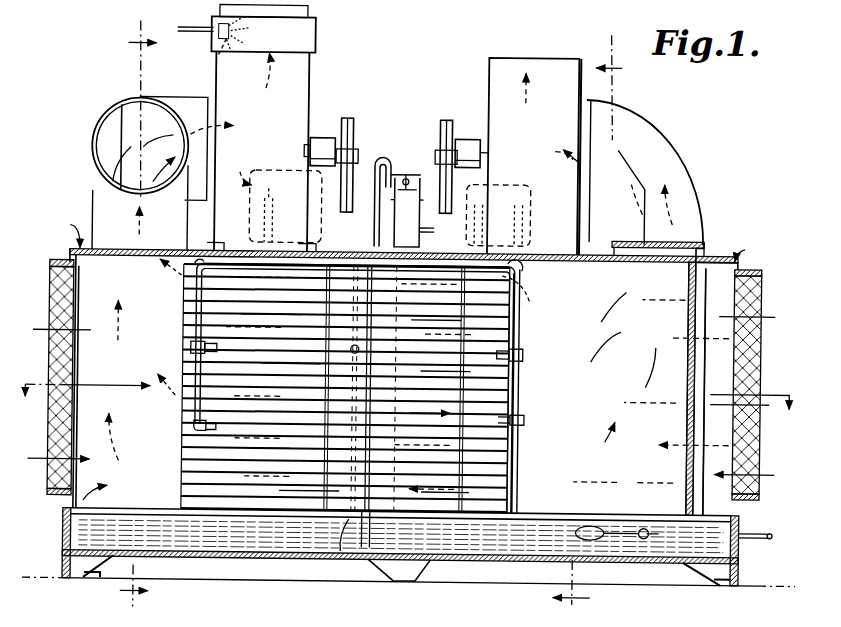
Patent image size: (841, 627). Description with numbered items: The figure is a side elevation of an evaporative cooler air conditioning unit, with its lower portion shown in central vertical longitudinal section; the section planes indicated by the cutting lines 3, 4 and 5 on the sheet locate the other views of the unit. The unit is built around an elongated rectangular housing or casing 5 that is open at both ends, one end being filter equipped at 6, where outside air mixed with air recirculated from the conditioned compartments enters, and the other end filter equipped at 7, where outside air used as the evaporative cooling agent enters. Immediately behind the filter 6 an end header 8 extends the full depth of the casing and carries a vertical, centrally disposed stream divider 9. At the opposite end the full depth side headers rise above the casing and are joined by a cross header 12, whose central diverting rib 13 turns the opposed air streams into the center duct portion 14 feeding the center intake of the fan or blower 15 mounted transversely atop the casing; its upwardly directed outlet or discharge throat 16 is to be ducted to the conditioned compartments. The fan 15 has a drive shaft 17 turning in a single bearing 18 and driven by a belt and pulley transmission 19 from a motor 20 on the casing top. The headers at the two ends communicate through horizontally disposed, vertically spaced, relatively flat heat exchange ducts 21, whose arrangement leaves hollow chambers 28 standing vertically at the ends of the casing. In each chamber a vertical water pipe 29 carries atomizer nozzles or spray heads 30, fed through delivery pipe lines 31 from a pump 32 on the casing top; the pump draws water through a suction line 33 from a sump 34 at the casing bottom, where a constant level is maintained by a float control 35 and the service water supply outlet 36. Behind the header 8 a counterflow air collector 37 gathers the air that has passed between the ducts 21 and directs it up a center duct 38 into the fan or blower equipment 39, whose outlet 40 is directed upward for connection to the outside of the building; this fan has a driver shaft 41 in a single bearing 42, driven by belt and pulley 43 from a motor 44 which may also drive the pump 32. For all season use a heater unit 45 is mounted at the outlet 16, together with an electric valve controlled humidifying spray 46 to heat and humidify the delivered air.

The section line 3- 3 is at (403, 410).
The section line 4- 4 is at (138, 313).
The housing or casing 5 is at (404, 314).
The filter 6 is at (751, 362).
The filter 7 is at (60, 310).
The end header 8 is at (701, 252).
The stream divider 9 is at (704, 289).
The cross header 12 is at (135, 149).
The diverting rib 13 is at (127, 129).
The center duct portion 14 is at (197, 119).
The fan or blower 15 is at (277, 131).
The outlet or discharge throat 16 is at (289, 67).
The drive shaft 17 is at (309, 152).
The single bearing 18 is at (338, 128).
The belt and pulley transmission 19 is at (332, 192).
The motor 20 is at (236, 169).
The heat exchange ducts 21 is at (185, 313).
The hollow chambers 28 is at (64, 523).
The water pipe 29 is at (184, 365).
The atomizer nozzles or spray heads 30 is at (185, 431).
The delivery pipe lines 31 is at (520, 284).
The pump 32 is at (407, 229).
The suction line 33 is at (377, 154).
The sump 34 is at (492, 545).
The float control 35 is at (584, 528).
The service water supply outlet 36 is at (766, 530).
The counterflow air collector 37 is at (672, 465).
The center duct 38 is at (630, 178).
The fan or blower equipment 39 is at (520, 106).
The outlet 40 is at (486, 58).
The driver shaft 41 is at (482, 150).
The single bearing 42 is at (442, 123).
The belt and pulley 43 is at (442, 170).
The motor 44 is at (512, 196).
The heater unit 45 is at (204, 43).
The humidifying spray 46 is at (214, 59).